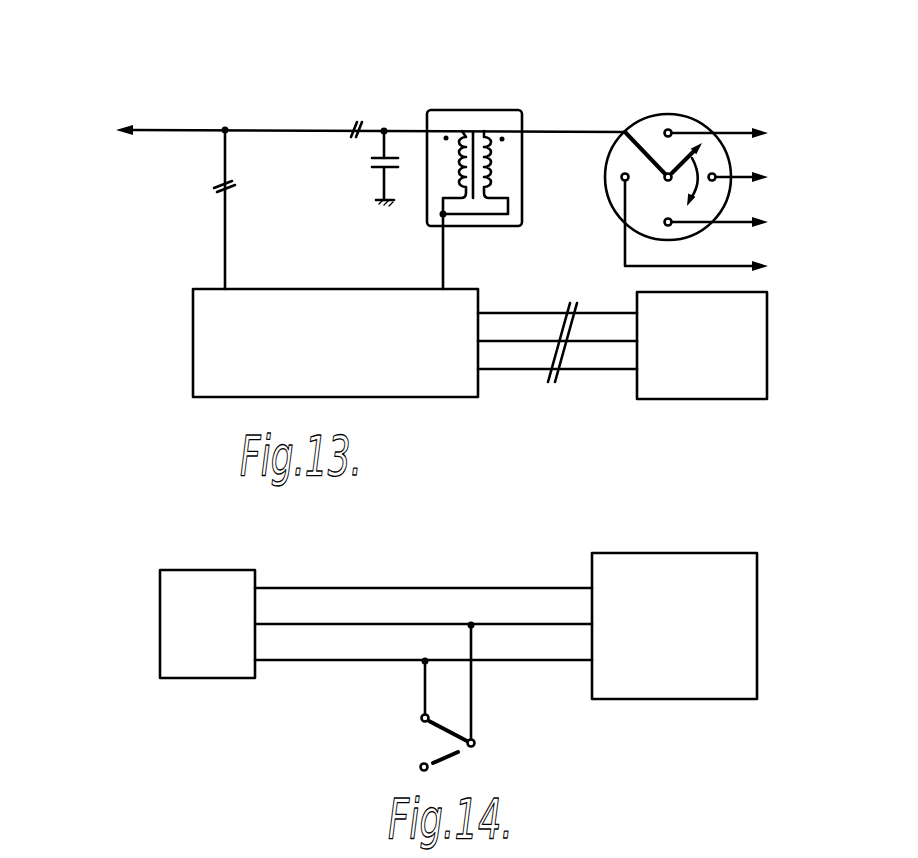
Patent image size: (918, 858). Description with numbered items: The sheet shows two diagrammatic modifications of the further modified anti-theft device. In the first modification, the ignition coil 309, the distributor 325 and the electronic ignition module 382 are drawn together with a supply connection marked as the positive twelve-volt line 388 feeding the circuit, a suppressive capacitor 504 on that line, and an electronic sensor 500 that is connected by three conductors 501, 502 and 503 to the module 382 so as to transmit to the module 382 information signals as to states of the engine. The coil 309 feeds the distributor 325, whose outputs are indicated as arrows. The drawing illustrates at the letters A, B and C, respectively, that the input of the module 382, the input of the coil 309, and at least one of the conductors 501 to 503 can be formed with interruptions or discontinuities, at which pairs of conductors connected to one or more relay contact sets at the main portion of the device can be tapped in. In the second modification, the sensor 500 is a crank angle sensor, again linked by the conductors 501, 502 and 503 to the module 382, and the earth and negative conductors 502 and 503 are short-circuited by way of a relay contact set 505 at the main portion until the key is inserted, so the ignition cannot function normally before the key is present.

In FIG. 13, the supply line 388 is at (176, 125).
In FIG. 13, the electronic ignition module 382 is at (193, 291).
In FIG. 14, the electronic ignition module 382 is at (748, 588).
In FIG. 13, the suppressive capacitor 504 is at (378, 172).
In FIG. 13, the ignition coil 309 is at (468, 115).
In FIG. 13, the distributor 325 is at (655, 128).
In FIG. 13, the electronic sensor 500 is at (760, 330).
In FIG. 14, the electronic sensor 500 is at (168, 600).
In FIG. 13, the conductor 501 is at (518, 312).
In FIG. 14, the conductor 501 is at (335, 587).
In FIG. 13, the earth conductor 502 is at (528, 342).
In FIG. 14, the earth conductor 502 is at (352, 623).
In FIG. 13, the negative conductor 503 is at (510, 371).
In FIG. 14, the negative conductor 503 is at (398, 660).
In FIG. 14, the relay contact set 505 is at (440, 745).